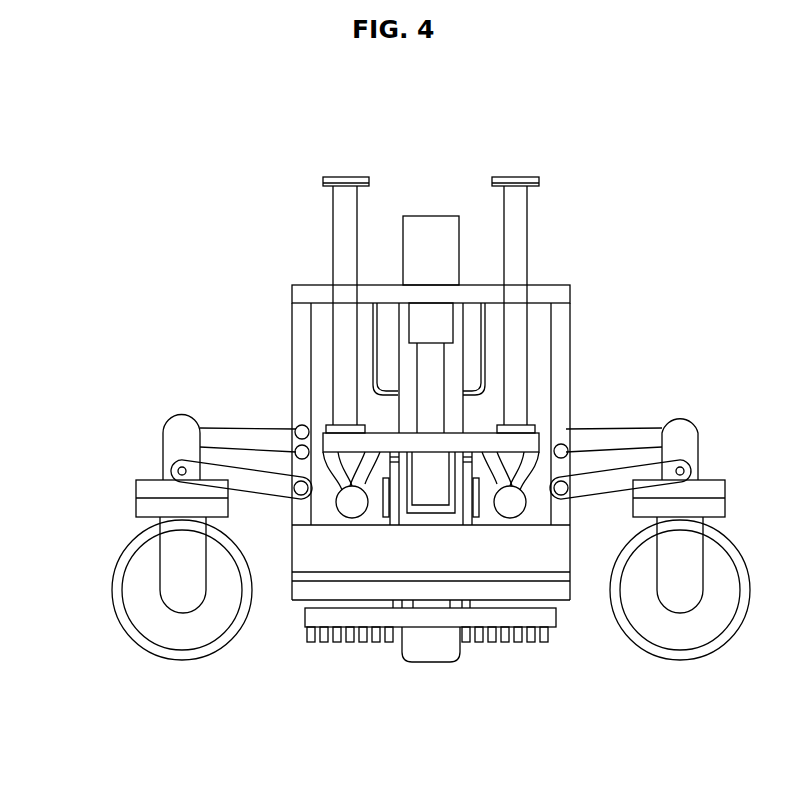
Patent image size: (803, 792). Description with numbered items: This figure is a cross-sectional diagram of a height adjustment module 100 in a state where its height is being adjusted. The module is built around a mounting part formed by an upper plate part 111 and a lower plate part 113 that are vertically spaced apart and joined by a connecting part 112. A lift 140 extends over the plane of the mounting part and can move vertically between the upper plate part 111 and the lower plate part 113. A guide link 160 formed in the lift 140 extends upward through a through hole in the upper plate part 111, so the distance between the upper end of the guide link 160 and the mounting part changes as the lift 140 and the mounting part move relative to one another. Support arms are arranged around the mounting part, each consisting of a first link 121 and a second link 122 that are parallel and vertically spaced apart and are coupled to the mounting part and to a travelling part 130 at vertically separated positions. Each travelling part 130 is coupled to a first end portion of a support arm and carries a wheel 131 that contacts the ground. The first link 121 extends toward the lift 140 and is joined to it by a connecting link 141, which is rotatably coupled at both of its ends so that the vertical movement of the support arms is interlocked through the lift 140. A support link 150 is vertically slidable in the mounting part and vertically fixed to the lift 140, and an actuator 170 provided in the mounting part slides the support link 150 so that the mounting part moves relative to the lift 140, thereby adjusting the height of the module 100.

The height adjustment module 100 is at (641, 772).
The upper plate part 111 is at (570, 293).
The connecting part 112 is at (568, 341).
The lower plate part 113 is at (562, 590).
The first link 121 is at (238, 438).
The second link 122 is at (200, 470).
The travelling part 130 is at (385, 586).
The wheel 131 is at (183, 636).
The lift 140 is at (522, 442).
The connecting link 141 is at (362, 472).
The support link 150 is at (437, 383).
The guide link 160 is at (525, 218).
The actuator 170 is at (431, 226).